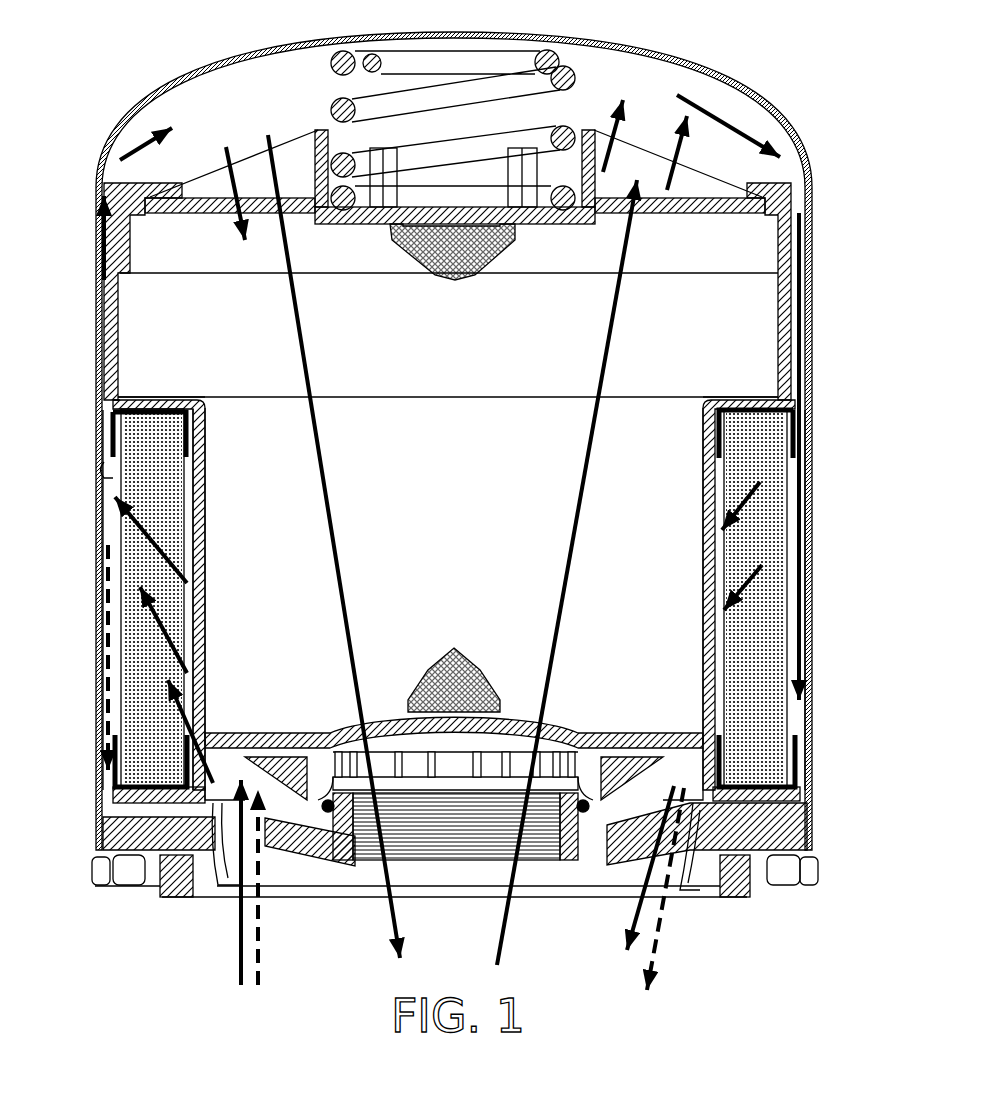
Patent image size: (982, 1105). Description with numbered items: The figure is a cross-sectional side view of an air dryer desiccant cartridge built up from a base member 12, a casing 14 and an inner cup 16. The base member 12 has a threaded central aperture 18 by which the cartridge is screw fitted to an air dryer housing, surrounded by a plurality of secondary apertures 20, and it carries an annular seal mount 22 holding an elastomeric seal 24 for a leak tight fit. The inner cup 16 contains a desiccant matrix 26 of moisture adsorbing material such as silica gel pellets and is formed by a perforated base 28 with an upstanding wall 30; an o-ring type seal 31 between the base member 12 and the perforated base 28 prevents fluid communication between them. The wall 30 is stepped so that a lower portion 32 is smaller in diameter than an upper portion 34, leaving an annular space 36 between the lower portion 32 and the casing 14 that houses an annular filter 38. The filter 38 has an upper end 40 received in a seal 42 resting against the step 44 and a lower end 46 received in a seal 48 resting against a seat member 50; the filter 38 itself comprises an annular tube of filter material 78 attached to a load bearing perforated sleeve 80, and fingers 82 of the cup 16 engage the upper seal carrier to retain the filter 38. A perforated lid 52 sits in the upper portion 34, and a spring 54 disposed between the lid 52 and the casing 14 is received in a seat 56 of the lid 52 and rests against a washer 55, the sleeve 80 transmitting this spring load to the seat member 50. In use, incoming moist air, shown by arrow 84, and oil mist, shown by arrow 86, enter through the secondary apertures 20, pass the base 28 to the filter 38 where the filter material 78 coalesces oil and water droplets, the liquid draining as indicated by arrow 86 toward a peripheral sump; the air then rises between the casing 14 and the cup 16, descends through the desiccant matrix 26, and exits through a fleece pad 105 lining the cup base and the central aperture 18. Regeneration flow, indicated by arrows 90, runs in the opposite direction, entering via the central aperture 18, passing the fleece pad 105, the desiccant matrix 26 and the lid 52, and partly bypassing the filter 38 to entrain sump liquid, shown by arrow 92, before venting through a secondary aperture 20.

The base member 12 is at (313, 867).
The casing 14 is at (812, 350).
The inner cup 16 is at (110, 310).
The central aperture 18 is at (457, 845).
The secondary apertures 20 is at (213, 887).
The annular seal mount 22 is at (775, 885).
The elastomeric seal 24 is at (735, 897).
The desiccant matrix 26 is at (440, 345).
The perforated base 28 is at (618, 733).
The upstanding wall 30 is at (208, 455).
The o-ring type seal 31 is at (322, 770).
The lower portion 32 is at (643, 475).
The upper portion 34 is at (718, 360).
The annular space 36 is at (100, 612).
The annular filter 38 is at (790, 508).
The upper end 40 is at (128, 435).
The seal 42 is at (113, 410).
The step 44 is at (155, 397).
The lower end 46 is at (137, 712).
The seal 48 is at (115, 770).
The seat member 50 is at (115, 798).
The perforated lid 52 is at (750, 213).
The spring 54 is at (550, 50).
The washer 55 is at (575, 218).
The seat 56 is at (320, 218).
The filter material 78 is at (785, 660).
The perforated sleeve 80 is at (190, 495).
The fingers 82 is at (107, 473).
The arrow indicating incoming moist air 84 is at (142, 145).
The arrow indicating oil mist 86 is at (107, 655).
The arrows indicating regeneration flow 90 is at (705, 103).
The arrow indicating entrained liquid 92 is at (655, 965).
The fleece pad 105 is at (385, 712).